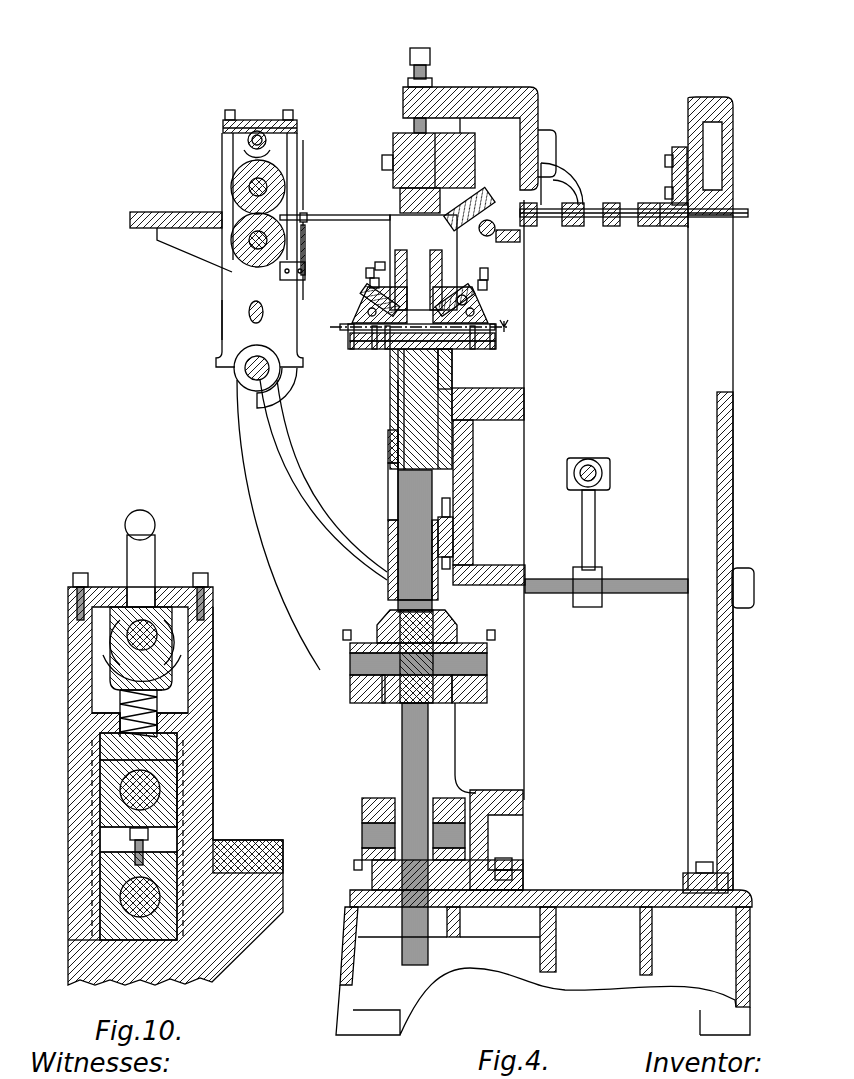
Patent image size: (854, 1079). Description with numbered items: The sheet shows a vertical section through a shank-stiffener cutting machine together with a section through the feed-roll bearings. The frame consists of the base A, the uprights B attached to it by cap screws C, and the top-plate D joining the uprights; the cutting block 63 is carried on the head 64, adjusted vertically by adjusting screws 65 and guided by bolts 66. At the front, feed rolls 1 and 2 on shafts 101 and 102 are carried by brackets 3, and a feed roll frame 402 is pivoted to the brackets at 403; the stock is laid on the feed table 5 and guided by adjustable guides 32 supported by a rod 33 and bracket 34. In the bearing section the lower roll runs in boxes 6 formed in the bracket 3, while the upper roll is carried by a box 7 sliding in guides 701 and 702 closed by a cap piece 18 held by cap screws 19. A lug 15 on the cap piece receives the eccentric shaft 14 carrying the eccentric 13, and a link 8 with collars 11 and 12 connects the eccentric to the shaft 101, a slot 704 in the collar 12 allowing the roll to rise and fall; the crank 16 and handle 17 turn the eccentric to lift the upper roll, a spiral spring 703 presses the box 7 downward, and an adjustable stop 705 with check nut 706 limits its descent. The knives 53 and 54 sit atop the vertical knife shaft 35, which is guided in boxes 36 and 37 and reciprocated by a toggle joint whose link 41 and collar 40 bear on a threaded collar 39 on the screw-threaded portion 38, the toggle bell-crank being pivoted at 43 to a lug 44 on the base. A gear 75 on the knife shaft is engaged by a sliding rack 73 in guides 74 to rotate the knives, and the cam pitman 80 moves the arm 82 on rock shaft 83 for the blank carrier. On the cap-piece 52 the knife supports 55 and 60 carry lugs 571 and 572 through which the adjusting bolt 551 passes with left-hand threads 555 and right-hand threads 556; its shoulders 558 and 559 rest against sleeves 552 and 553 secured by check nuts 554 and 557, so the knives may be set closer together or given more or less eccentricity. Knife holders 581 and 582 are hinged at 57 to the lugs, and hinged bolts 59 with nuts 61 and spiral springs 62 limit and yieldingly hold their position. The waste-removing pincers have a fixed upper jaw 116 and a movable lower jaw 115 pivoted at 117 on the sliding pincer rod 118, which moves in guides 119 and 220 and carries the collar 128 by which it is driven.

In FIG. 4, the upper feed roll 1 is at (237, 172).
In FIG. 4, the lower feed roll 2 is at (240, 255).
In FIG. 4, the brackets or arms 3 is at (237, 460).
In FIG. 4, the feed table 5 is at (175, 220).
In FIG. 10, the feed table 5 is at (240, 840).
In FIG. 10, the boxes 6 is at (100, 935).
In FIG. 10, the box 7 is at (178, 762).
In FIG. 4, the link 8 is at (265, 152).
In FIG. 10, the link 8 is at (110, 720).
In FIG. 4, the collar 11 is at (335, 328).
In FIG. 10, the collar 11 is at (100, 665).
In FIG. 10, the collar 12 is at (105, 745).
In FIG. 10, the eccentric 13 is at (108, 650).
In FIG. 4, the eccentric shaft 14 is at (225, 128).
In FIG. 10, the eccentric shaft 14 is at (135, 632).
In FIG. 4, the lug 15 is at (255, 142).
In FIG. 10, the lug 15 is at (135, 682).
In FIG. 10, the crank 16 is at (130, 578).
In FIG. 10, the handle 17 is at (133, 513).
In FIG. 4, the cap piece 18 is at (258, 122).
In FIG. 10, the cap piece 18 is at (150, 608).
In FIG. 4, the cap screws 19 is at (230, 110).
In FIG. 10, the cap screws 19 is at (80, 575).
In FIG. 4, the adjustable guides 32 is at (320, 214).
In FIG. 4, the rod 33 is at (308, 228).
In FIG. 4, the bracket 34 is at (306, 256).
In FIG. 4, the knife shaft 35 is at (415, 500).
In FIG. 4, the box 36 is at (385, 872).
In FIG. 4, the box 37 is at (390, 458).
In FIG. 4, the screw-threaded portion 38 is at (413, 703).
In FIG. 4, the internally threaded collar 39 is at (398, 600).
In FIG. 4, the toggle-joint collar 40 is at (380, 582).
In FIG. 4, the link 41 is at (355, 690).
In FIG. 4, the pivot 43 is at (365, 818).
In FIG. 4, the lug 44 is at (513, 875).
In FIG. 4, the cap-piece 52 is at (480, 405).
In FIG. 4, the knife 53 is at (395, 262).
In FIG. 4, the knife 54 is at (440, 250).
In FIG. 4, the knife support 55 is at (326, 332).
In FIG. 4, the hinge 57 is at (372, 307).
In FIG. 4, the hinged bolts 59 is at (370, 292).
In FIG. 4, the knife support 60 is at (468, 306).
In FIG. 4, the nuts 61 is at (375, 298).
In FIG. 4, the spiral springs 62 is at (370, 312).
In FIG. 4, the cutting block 63 is at (395, 140).
In FIG. 4, the head 64 is at (455, 135).
In FIG. 4, the adjusting screws 65 is at (425, 50).
In FIG. 4, the bolts 66 is at (383, 166).
In FIG. 4, the sliding rack 73 is at (447, 535).
In FIG. 4, the guides 74 is at (450, 507).
In FIG. 4, the gear 75 is at (393, 530).
In FIG. 4, the cam pitman 80 is at (590, 472).
In FIG. 4, the arm 82 is at (592, 525).
In FIG. 4, the rock shaft 83 is at (612, 588).
In FIG. 4, the shaft 101 is at (249, 188).
In FIG. 10, the shaft 101 is at (140, 785).
In FIG. 4, the shaft 102 is at (235, 252).
In FIG. 10, the shaft 102 is at (145, 900).
In FIG. 4, the lower jaw 115 is at (478, 225).
In FIG. 4, the upper jaw 116 is at (553, 160).
In FIG. 4, the pivot 117 is at (530, 203).
In FIG. 4, the sliding pincer rod 118 is at (612, 218).
In FIG. 4, the guide 119 is at (572, 162).
In FIG. 4, the collar 128 is at (655, 207).
In FIG. 4, the guide 220 is at (678, 228).
In FIG. 4, the feed roll frame 402 is at (220, 318).
In FIG. 10, the feed roll frame 402 is at (70, 882).
In FIG. 4, the pivot 403 is at (257, 370).
In FIG. 4, the adjusting bolt 551 is at (395, 400).
In FIG. 4, the sleeve 552 is at (352, 340).
In FIG. 4, the sleeve 553 is at (480, 345).
In FIG. 4, the check nut 554 is at (370, 348).
In FIG. 4, the left hand threads 555 is at (388, 350).
In FIG. 4, the right hand threads 556 is at (402, 420).
In FIG. 4, the check nut 557 is at (510, 322).
In FIG. 4, the shoulder or collar 558 is at (362, 350).
In FIG. 4, the shoulder or collar 559 is at (482, 350).
In FIG. 4, the lug 571 is at (400, 365).
In FIG. 4, the lug 572 is at (452, 375).
In FIG. 4, the knife holder 581 is at (385, 262).
In FIG. 4, the knife holder 582 is at (520, 238).
In FIG. 4, the guide 701 is at (300, 150).
In FIG. 10, the guide 702 is at (205, 672).
In FIG. 10, the spiral spring 703 is at (160, 715).
In FIG. 10, the slot 704 is at (200, 778).
In FIG. 10, the adjustable stop 705 is at (160, 827).
In FIG. 10, the check nut 706 is at (130, 836).
In FIG. 4, the base A is at (345, 975).
In FIG. 4, the uprights B is at (526, 735).
In FIG. 4, the cap screws C is at (503, 860).
In FIG. 4, the top-plate D is at (540, 95).